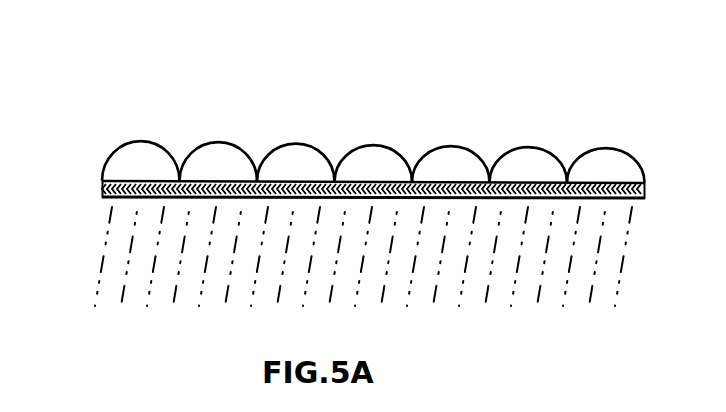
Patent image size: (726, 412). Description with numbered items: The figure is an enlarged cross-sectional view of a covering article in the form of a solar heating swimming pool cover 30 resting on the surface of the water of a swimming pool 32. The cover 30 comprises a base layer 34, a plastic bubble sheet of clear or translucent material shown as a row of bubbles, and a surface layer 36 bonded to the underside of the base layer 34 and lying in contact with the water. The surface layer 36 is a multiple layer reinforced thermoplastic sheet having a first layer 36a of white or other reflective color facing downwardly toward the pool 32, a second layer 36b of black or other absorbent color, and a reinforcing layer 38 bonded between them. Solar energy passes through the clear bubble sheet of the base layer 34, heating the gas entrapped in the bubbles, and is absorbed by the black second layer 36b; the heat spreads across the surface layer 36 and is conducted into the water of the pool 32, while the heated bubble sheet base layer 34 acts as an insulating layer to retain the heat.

The swimming pool cover 30 is at (345, 130).
The swimming pool 32 is at (310, 302).
The base layer 34 is at (112, 150).
The surface layer 36 is at (345, 161).
The first layer 36a is at (580, 200).
The second layer 36b is at (525, 184).
The reinforcing layer 38 is at (457, 186).